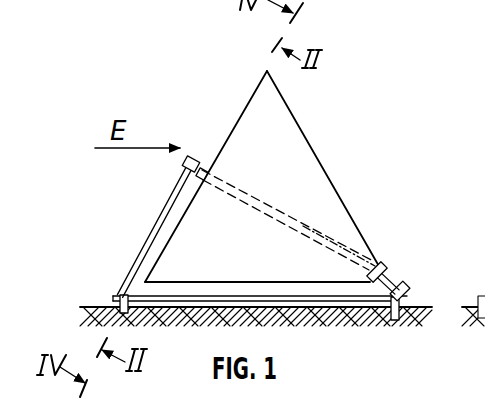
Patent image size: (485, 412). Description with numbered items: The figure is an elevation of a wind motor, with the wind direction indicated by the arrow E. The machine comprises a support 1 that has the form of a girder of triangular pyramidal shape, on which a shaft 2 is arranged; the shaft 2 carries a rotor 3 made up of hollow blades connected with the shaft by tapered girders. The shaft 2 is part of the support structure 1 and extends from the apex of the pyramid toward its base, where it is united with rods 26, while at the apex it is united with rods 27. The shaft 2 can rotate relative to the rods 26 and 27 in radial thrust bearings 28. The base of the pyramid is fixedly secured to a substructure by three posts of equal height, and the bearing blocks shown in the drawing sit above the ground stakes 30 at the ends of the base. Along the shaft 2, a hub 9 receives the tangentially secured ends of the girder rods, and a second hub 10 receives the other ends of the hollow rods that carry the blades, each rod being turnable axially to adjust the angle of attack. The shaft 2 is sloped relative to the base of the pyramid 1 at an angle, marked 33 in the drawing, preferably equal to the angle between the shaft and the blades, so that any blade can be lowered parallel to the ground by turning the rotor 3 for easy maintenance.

The support 1 is at (161, 201).
The shaft 2 is at (390, 281).
The rotor 3 is at (325, 160).
The hub 9 is at (206, 168).
The second hub 10 is at (380, 264).
The rods 26 is at (226, 297).
The rods 27 is at (151, 234).
The radial thrust bearings 28 is at (189, 157).
The ground stake 30 is at (123, 293).
The phantom strut position 33 is at (288, 281).